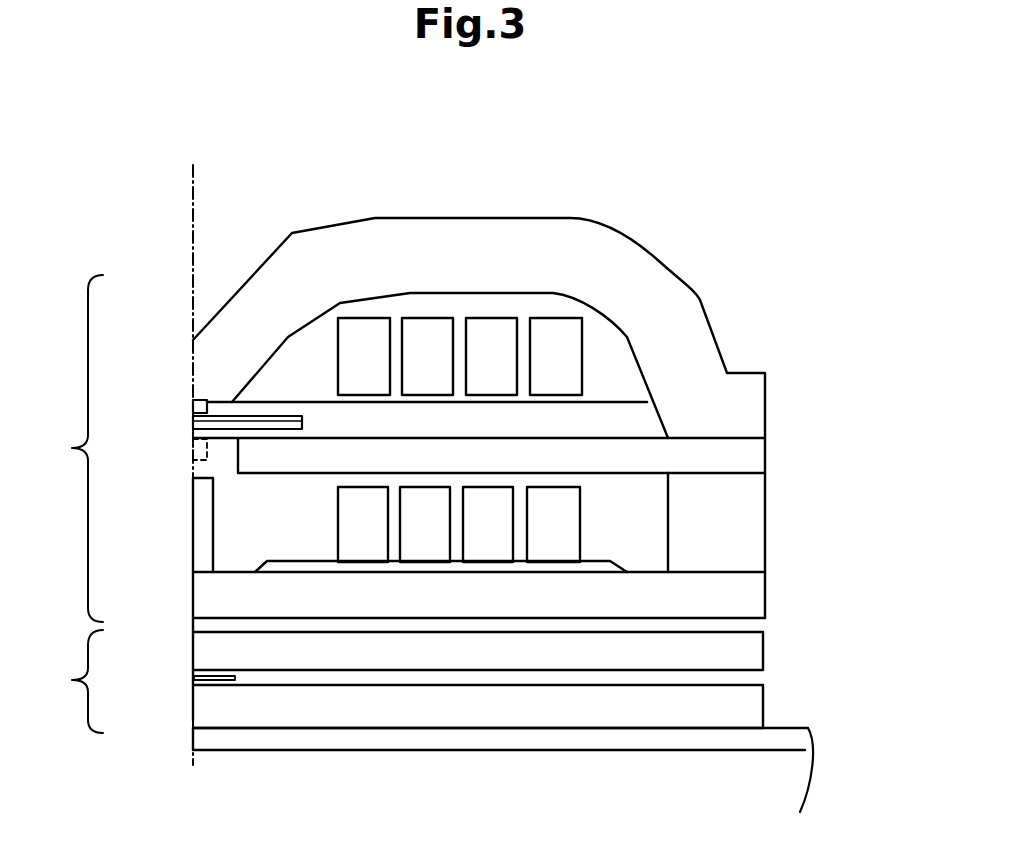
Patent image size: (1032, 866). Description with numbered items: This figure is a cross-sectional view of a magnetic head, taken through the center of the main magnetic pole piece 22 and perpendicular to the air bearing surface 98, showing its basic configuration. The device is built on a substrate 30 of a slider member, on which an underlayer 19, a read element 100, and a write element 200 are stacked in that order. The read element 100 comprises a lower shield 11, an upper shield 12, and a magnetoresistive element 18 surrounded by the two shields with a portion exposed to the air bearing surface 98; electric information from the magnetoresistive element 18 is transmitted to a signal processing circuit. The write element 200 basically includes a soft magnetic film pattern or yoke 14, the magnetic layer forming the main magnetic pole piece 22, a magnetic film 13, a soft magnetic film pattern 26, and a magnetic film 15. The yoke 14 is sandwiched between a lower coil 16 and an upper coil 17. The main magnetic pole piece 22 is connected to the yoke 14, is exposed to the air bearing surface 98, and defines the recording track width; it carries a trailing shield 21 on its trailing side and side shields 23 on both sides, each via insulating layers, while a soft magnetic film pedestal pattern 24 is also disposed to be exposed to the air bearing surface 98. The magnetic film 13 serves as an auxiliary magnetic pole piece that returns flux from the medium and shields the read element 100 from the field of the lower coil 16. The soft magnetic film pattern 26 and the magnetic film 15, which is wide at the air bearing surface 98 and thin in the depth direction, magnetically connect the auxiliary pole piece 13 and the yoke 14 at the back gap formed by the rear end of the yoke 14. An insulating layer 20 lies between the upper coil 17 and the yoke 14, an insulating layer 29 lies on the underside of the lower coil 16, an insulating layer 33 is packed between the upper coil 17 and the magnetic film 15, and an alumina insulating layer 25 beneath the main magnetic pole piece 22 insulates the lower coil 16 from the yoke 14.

The lower shield 11 is at (752, 705).
The upper shield 12 is at (752, 655).
The magnetic film 13 is at (752, 598).
The soft magnetic film pattern (yoke) 14 is at (752, 460).
The magnetic film 15 is at (603, 263).
The lower coil 16 is at (565, 513).
The upper coil 17 is at (560, 358).
The magnetoresistive element 18 is at (195, 686).
The underlayer 19 is at (802, 745).
The insulating layer 20 is at (592, 399).
The trailing shield 21 is at (193, 407).
The main magnetic pole piece 22 is at (203, 432).
The side shields 23 is at (200, 458).
The soft magnetic film pedestal pattern 24 is at (202, 490).
The insulating layer 25 is at (265, 533).
The soft magnetic film pattern 26 is at (752, 550).
The insulating layer 29 is at (427, 567).
The substrate 30 is at (785, 786).
The insulating layer 33 is at (442, 305).
The air bearing surface 98 is at (180, 235).
The read element 100 is at (61, 681).
The write element 200 is at (61, 448).